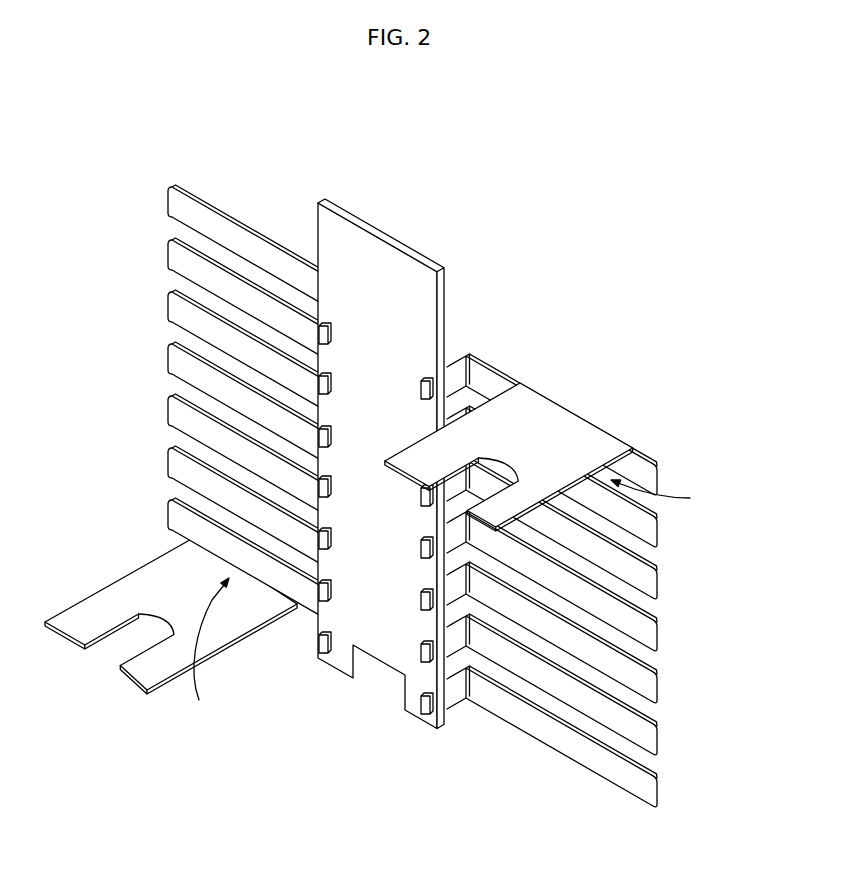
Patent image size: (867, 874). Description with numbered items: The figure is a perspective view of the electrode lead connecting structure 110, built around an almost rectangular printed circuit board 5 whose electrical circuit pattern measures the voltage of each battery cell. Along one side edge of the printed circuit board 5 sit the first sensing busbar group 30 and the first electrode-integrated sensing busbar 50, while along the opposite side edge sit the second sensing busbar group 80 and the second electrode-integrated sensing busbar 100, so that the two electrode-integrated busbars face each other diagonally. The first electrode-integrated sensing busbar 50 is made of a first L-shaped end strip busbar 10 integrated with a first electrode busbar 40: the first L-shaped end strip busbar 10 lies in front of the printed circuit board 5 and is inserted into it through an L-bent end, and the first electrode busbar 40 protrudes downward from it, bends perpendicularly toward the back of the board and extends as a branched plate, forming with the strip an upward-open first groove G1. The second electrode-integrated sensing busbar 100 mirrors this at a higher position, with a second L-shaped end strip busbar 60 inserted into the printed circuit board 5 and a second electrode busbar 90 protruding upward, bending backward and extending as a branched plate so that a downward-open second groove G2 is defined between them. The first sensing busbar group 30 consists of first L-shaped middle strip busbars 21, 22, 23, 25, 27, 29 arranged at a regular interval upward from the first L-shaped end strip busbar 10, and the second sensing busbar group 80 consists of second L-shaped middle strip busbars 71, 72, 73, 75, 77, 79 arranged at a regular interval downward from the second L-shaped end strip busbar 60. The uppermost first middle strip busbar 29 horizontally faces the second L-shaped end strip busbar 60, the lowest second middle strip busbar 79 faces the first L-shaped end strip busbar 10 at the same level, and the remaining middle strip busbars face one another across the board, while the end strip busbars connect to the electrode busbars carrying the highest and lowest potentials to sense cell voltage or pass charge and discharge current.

The electrode lead connecting structure 110 is at (191, 104).
The printed circuit board 5 is at (396, 240).
The first L-shaped end strip busbar 10 is at (201, 557).
The first L-shaped middle strip busbar 21 is at (219, 505).
The first L-shaped middle strip busbar 22 is at (219, 453).
The first L-shaped middle strip busbar 23 is at (219, 401).
The first L-shaped middle strip busbar 25 is at (219, 349).
The first L-shaped middle strip busbar 27 is at (219, 297).
The first L-shaped middle strip busbar 29 is at (219, 244).
The first sensing busbar group 30 is at (107, 185).
The first electrode busbar 40 is at (90, 612).
The first electrode-integrated sensing busbar 50 is at (70, 505).
The second L-shaped end strip busbar 60 is at (589, 424).
The second L-shaped middle strip busbar 71 is at (580, 480).
The second L-shaped middle strip busbar 72 is at (580, 528).
The second L-shaped middle strip busbar 73 is at (580, 580).
The second L-shaped middle strip busbar 75 is at (580, 632).
The second L-shaped middle strip busbar 77 is at (580, 684).
The second L-shaped middle strip busbar 79 is at (580, 736).
The second sensing busbar group 80 is at (720, 532).
The second electrode busbar 90 is at (602, 440).
The second electrode-integrated sensing busbar 100 is at (627, 385).
The first groove G1 is at (205, 651).
The second groove G2 is at (668, 496).